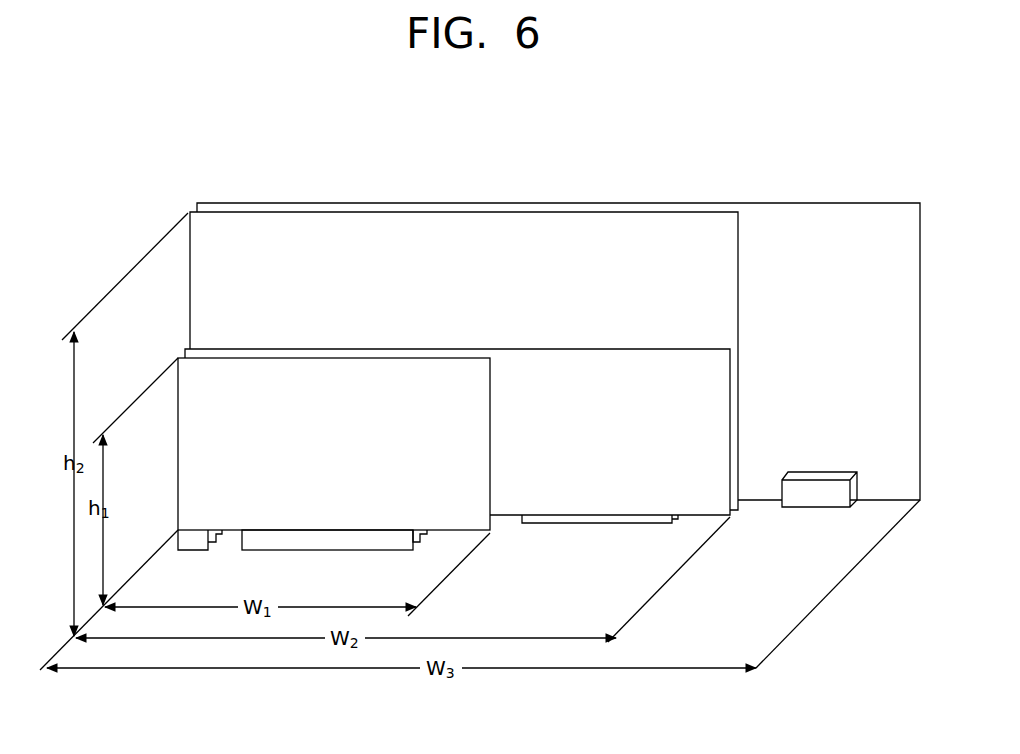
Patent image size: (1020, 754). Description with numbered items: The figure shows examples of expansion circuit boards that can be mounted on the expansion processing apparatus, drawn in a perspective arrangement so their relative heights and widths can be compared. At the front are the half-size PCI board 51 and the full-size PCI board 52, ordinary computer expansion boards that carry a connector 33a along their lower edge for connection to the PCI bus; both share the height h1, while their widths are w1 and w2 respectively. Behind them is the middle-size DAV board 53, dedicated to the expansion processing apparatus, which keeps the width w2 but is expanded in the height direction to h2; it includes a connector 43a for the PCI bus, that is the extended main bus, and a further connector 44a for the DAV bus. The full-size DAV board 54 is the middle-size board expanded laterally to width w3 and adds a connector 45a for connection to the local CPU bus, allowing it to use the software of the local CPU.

The half-size PCI board 51 is at (192, 461).
The full-size PCI board 52 is at (556, 497).
The middle-size DAV board 53 is at (553, 232).
The full-size DAV board 54 is at (828, 218).
The connector 33a is at (337, 540).
The connector 43a is at (426, 543).
The connector 44a is at (618, 524).
The connector 45a is at (818, 502).